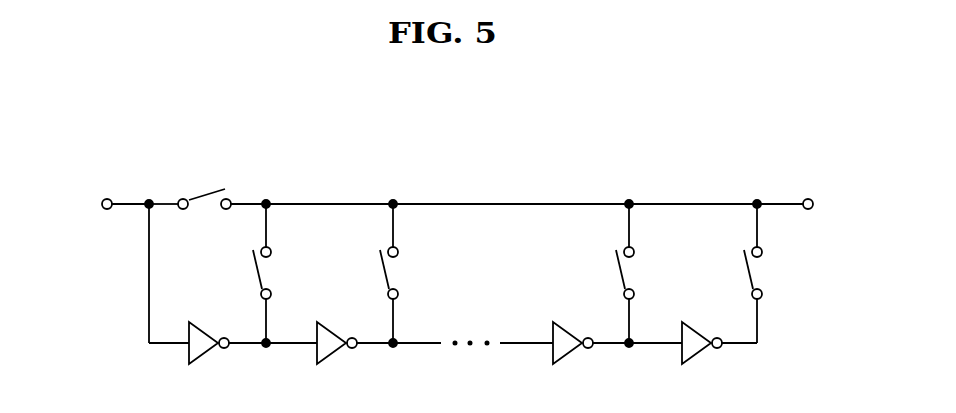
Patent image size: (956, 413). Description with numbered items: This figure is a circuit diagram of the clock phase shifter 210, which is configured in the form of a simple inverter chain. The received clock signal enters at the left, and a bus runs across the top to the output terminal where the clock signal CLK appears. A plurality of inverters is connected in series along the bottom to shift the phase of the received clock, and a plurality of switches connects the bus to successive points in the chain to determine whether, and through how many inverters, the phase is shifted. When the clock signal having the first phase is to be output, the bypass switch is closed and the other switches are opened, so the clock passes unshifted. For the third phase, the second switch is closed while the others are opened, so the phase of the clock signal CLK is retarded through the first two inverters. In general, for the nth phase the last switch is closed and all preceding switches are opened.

The clock phase shifter 210 is at (442, 243).
The clock signal CLK is at (812, 204).